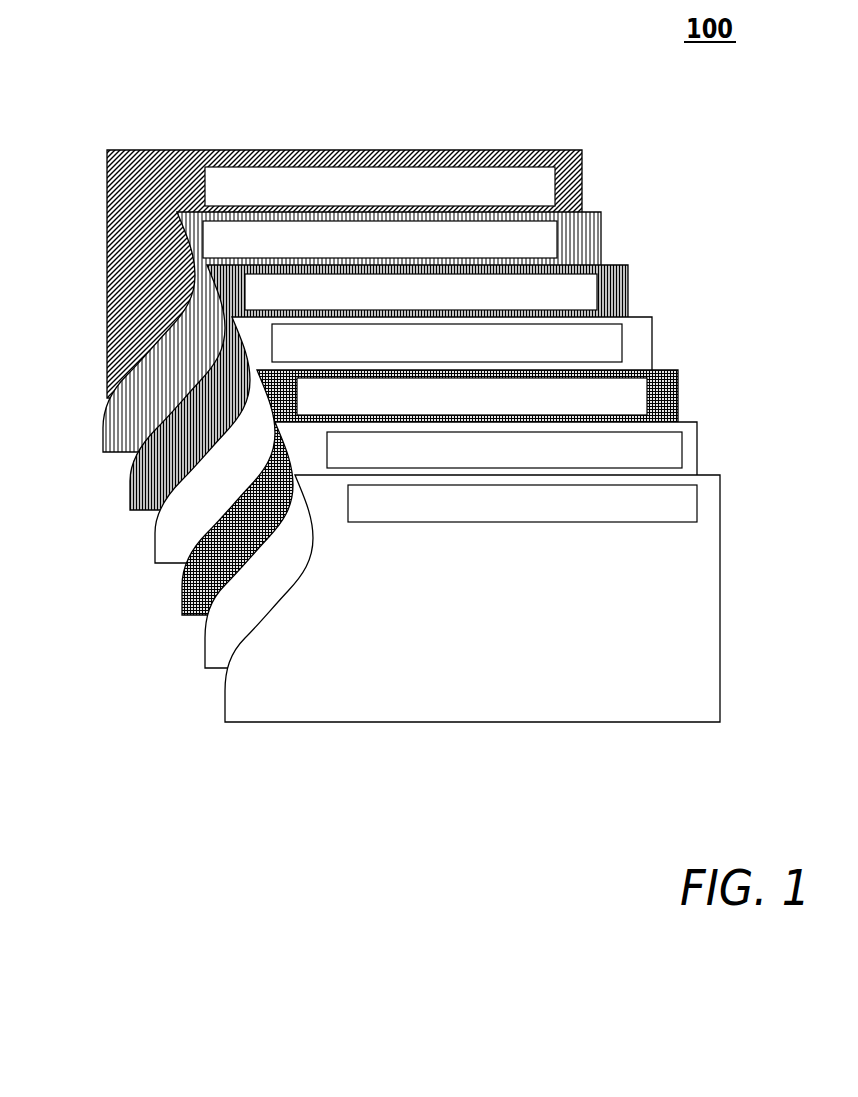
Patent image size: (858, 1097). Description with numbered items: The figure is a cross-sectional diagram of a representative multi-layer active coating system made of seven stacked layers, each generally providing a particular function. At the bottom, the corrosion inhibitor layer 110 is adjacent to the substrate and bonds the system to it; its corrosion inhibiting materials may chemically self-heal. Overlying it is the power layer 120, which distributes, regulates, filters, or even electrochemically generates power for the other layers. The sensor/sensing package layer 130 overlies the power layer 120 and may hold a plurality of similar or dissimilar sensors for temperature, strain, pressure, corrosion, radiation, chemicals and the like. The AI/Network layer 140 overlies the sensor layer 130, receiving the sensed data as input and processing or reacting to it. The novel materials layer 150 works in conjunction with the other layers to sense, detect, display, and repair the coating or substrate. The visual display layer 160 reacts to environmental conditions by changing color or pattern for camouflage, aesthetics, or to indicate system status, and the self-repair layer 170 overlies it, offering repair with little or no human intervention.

The corrosion inhibitor layer 110 is at (107, 265).
The power layer 120 is at (108, 440).
The sensor/sensing package layer 130 is at (135, 502).
The AI/Network layer 140 is at (162, 553).
The novel materials layer 150 is at (190, 608).
The visual display layer 160 is at (208, 660).
The self-repair layer 170 is at (233, 713).